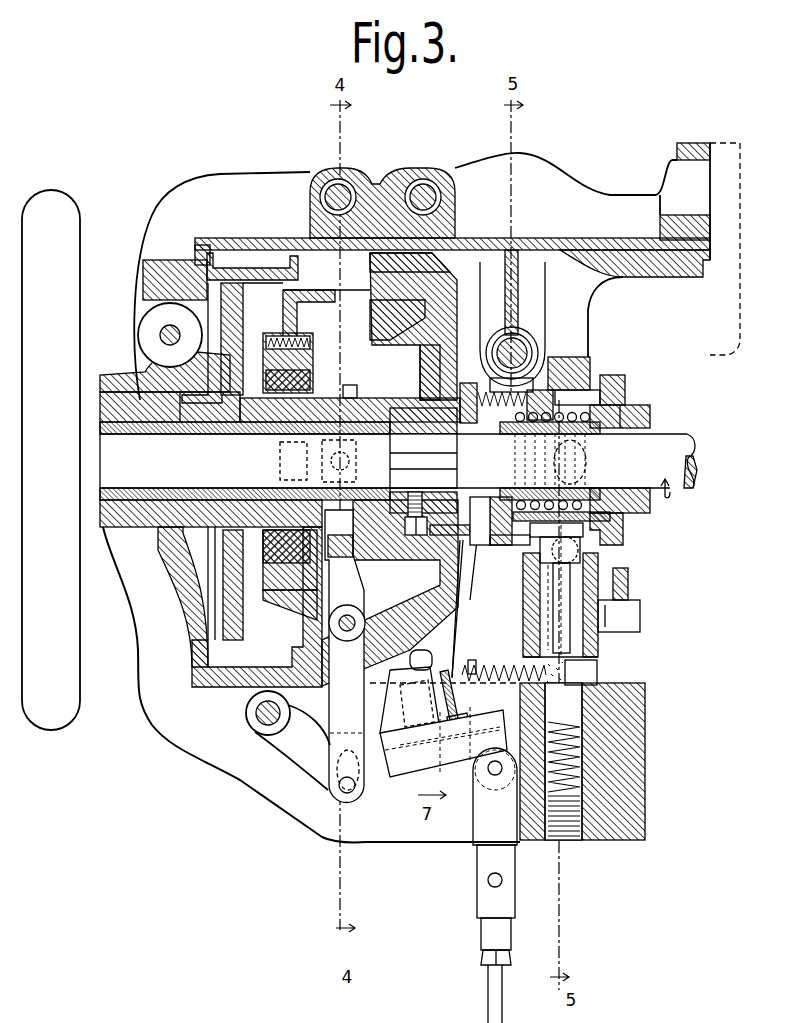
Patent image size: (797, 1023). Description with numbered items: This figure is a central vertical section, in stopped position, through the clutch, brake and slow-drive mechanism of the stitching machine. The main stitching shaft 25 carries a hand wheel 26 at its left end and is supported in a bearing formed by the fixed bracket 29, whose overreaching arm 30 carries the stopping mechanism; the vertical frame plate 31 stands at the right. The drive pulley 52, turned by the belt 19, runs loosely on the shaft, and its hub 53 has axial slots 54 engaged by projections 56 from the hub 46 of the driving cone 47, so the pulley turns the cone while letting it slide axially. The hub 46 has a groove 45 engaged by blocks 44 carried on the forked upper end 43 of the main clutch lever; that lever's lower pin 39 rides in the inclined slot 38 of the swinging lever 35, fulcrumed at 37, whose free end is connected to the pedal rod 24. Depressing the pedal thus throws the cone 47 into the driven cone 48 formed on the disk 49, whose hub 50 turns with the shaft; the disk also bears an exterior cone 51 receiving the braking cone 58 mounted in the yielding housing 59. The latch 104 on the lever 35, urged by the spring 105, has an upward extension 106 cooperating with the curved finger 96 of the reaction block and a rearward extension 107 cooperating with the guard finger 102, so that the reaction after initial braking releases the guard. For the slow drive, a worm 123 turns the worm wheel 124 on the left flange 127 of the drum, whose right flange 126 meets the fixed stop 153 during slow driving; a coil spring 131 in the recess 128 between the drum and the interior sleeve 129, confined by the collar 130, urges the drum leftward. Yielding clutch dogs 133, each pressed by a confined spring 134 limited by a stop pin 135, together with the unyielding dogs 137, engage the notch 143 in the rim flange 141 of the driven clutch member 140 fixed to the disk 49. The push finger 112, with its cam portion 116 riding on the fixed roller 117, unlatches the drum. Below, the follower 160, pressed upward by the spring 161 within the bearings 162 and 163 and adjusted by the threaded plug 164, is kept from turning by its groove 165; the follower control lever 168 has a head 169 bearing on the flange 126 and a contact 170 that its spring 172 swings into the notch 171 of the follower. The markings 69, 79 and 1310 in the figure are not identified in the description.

The belt 19 is at (230, 257).
The pedal rod 24 is at (499, 992).
The main or stitching shaft 25 is at (407, 461).
The hand wheel 26 is at (51, 460).
The fixed bracket 29 is at (655, 795).
The overreaching arm 30 is at (452, 240).
The vertical frame plate 31 is at (708, 249).
The swinging lever 35 is at (293, 750).
The fulcrum 37 is at (246, 724).
The inclined cam or slot 38 is at (338, 800).
The follower or pin 39 is at (356, 826).
The forked upper end 43 is at (344, 656).
The blocks 44 is at (347, 669).
The groove 45 is at (347, 398).
The hub 46 is at (317, 397).
The driving clutch member or cone 47 is at (322, 318).
The driven cone 48 is at (325, 307).
The disk or web 49 is at (437, 370).
The hub 50 is at (418, 407).
The exterior cone 51 is at (420, 282).
The drive pulley 52 is at (262, 258).
The pulley hub 53 is at (210, 421).
The axial slots 54 is at (278, 462).
The projections 56 is at (280, 446).
The braking cone 58 is at (380, 260).
The brake housing 59 is at (306, 274).
The boss 69 is at (326, 180).
The boss 79 is at (433, 180).
The curved finger 96 is at (367, 672).
The guard finger 102 is at (435, 654).
The latch 104 is at (418, 719).
The coil spring 105 is at (460, 708).
The upward extension 106 is at (392, 676).
The rearward extension 107 is at (441, 690).
The push finger 112 is at (629, 582).
The cam portion 116 is at (640, 604).
The fixed stud or roller 117 is at (622, 618).
The worm 123 is at (530, 325).
The worm wheel 124 is at (535, 358).
The right hand flange 126 is at (627, 380).
The left hand flange 127 is at (518, 546).
The recess 128 is at (575, 424).
The interior sleeve 129 is at (630, 405).
The collar 130 is at (650, 413).
The coil spring 131 is at (490, 338).
The yielding clutch dogs 133 is at (480, 370).
The confined spring 134 is at (444, 459).
The stop pin 135 is at (551, 362).
The unyielding clutch dogs 137 is at (445, 470).
The driven clutch member 140 is at (464, 490).
The rim flange 141 is at (466, 542).
The notch 143 is at (468, 392).
The fixed stop 153 is at (585, 380).
The follower 160 is at (623, 537).
The spring 161 is at (590, 736).
The upper bearing 162 is at (600, 563).
The lower bearing 163 is at (590, 832).
The threaded plug 164 is at (572, 845).
The vertical slot or groove 165 is at (557, 624).
The follower control lever 168 is at (556, 541).
The head or contact portion 169 is at (595, 485).
The offset flange or contact 170 is at (598, 667).
The notch 171 is at (545, 665).
The spring 172 is at (469, 664).
The splined portion 1310 is at (592, 466).